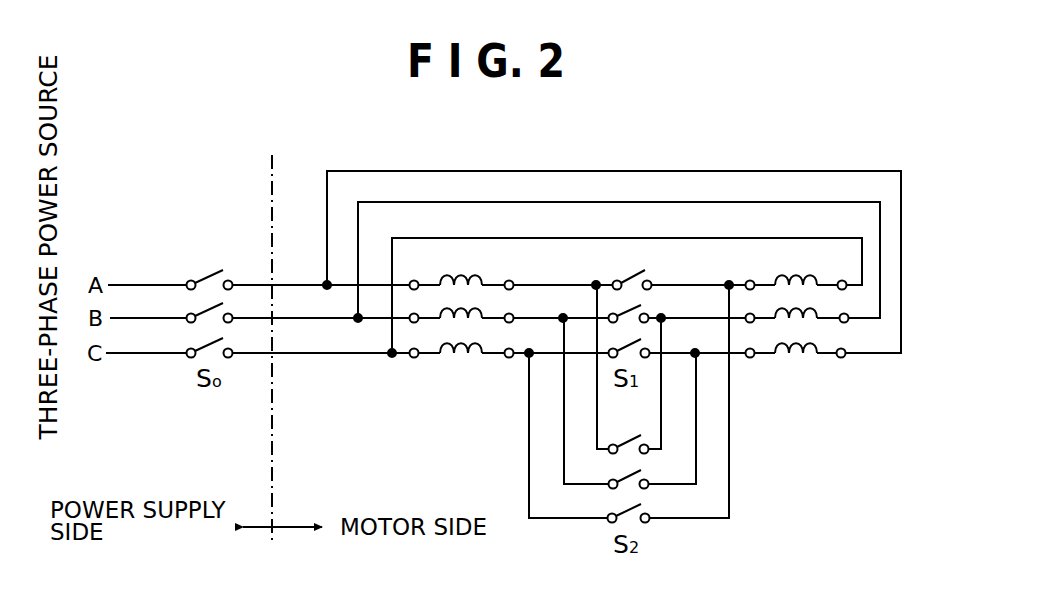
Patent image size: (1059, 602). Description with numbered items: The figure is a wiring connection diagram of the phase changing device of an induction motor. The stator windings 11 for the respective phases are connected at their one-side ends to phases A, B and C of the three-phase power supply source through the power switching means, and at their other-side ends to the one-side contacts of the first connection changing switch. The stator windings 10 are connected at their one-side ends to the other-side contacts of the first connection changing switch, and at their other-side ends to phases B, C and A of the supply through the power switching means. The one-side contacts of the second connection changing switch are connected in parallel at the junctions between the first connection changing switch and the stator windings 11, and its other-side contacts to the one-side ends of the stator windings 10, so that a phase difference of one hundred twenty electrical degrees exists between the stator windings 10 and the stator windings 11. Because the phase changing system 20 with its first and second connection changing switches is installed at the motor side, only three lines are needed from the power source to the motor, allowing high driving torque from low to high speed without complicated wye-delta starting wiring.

The stator windings 10 is at (778, 368).
The stator windings 11 is at (445, 367).
The phase changing system 20 is at (748, 453).